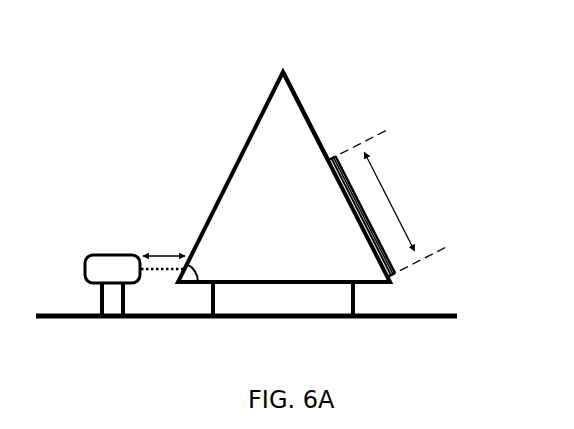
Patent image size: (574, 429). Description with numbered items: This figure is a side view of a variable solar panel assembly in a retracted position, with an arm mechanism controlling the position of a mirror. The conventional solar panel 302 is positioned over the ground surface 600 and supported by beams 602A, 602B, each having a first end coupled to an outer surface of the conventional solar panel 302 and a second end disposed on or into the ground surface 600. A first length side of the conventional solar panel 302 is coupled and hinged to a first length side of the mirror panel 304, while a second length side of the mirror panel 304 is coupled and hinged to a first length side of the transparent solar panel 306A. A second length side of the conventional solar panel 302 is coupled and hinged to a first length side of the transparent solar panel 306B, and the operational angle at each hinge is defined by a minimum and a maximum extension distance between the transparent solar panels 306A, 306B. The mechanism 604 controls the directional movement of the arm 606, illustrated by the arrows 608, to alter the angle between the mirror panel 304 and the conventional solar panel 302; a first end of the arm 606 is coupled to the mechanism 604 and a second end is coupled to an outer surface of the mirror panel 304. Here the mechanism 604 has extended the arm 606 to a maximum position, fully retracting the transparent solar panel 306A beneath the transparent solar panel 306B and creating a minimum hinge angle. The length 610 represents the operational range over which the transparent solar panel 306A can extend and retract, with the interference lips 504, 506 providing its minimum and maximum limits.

The conventional solar panel 302 is at (283, 283).
The mirror panel 304 is at (253, 127).
The transparent solar panel 306A is at (292, 87).
The transparent solar panel 306B is at (352, 193).
The interference lip 504 is at (392, 272).
The interference lip 506 is at (335, 157).
The ground surface 600 is at (458, 313).
The beam 602A is at (215, 297).
The beam 602B is at (353, 297).
The mechanism 604 is at (85, 270).
The arm 606 is at (158, 270).
The arrows 608 is at (162, 253).
The length 610 is at (402, 227).